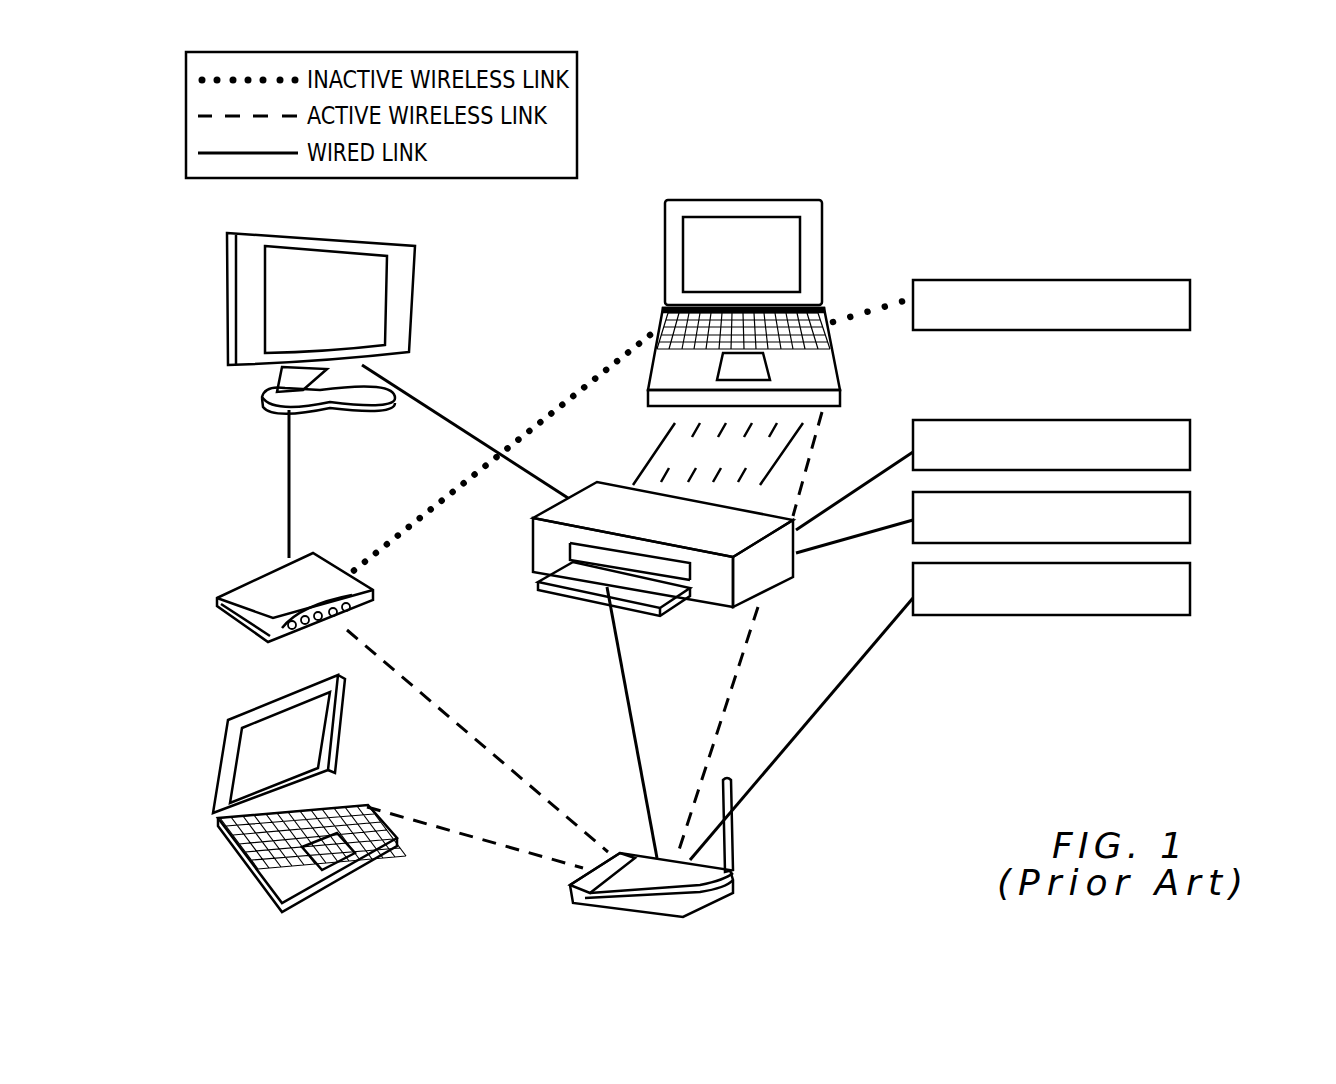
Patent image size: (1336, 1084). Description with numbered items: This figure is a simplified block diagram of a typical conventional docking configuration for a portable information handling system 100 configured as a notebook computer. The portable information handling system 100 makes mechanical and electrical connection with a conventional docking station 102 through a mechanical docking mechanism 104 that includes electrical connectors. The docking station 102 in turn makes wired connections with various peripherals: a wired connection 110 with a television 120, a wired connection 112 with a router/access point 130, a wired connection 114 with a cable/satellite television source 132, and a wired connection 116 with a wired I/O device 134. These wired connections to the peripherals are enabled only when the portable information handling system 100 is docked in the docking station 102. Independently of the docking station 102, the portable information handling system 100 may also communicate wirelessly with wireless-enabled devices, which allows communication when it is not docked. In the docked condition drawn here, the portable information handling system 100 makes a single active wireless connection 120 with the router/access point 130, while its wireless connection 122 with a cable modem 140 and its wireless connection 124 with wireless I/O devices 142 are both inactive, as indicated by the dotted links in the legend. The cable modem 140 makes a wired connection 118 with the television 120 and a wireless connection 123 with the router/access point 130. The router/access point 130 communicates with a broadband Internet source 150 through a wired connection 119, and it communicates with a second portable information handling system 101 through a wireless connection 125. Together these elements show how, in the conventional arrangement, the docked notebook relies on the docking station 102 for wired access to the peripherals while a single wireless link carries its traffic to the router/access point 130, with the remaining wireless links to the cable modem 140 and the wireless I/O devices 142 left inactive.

The portable information handling system 100 is at (773, 199).
The second portable information handling system 101 is at (360, 870).
The docking station 102 is at (530, 558).
The mechanical docking mechanism 104 is at (660, 445).
The wired connection 110 is at (457, 425).
The wired connection 112 is at (618, 652).
The wired connection 114 is at (872, 480).
The wired connection 116 is at (877, 531).
The wired connection 118 is at (288, 500).
The wired connection 119 is at (815, 720).
The television 120 is at (227, 300).
The wireless connection 122 is at (593, 380).
The wireless connection 123 is at (465, 730).
The wireless connection 124 is at (887, 305).
The wireless connection 125 is at (497, 846).
The router/access point 130 is at (720, 900).
The cable/satellite television source 132 is at (1192, 440).
The wired I/O device 134 is at (1192, 520).
The cable modem 140 is at (217, 598).
The wireless I/O devices 142 is at (1192, 304).
The broadband Internet source 150 is at (1192, 590).